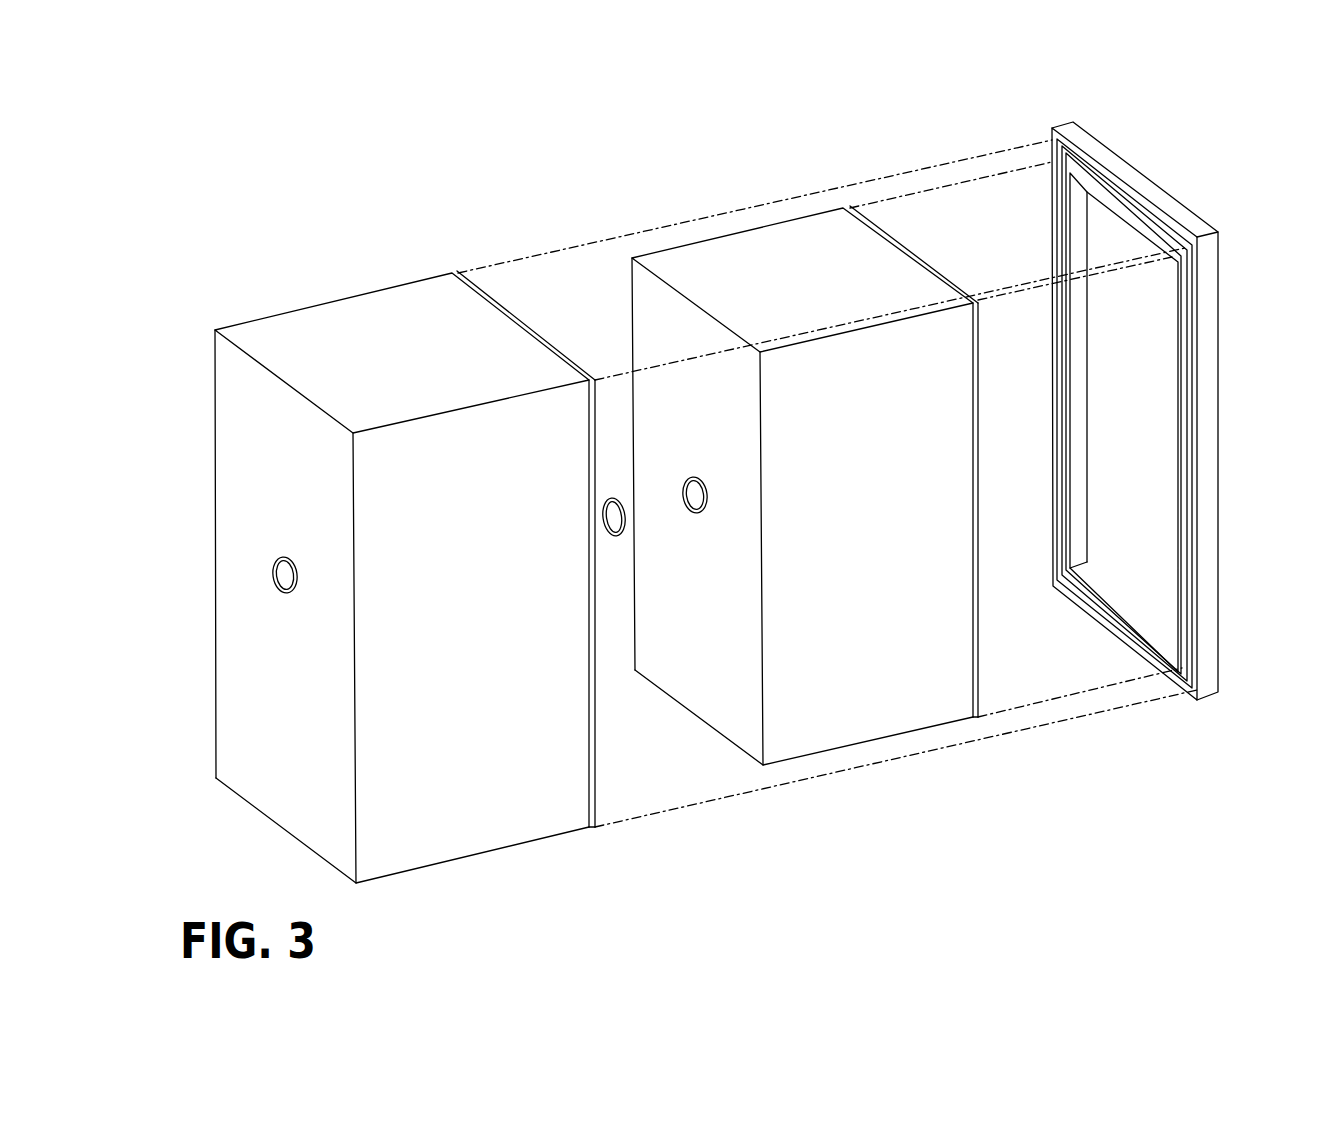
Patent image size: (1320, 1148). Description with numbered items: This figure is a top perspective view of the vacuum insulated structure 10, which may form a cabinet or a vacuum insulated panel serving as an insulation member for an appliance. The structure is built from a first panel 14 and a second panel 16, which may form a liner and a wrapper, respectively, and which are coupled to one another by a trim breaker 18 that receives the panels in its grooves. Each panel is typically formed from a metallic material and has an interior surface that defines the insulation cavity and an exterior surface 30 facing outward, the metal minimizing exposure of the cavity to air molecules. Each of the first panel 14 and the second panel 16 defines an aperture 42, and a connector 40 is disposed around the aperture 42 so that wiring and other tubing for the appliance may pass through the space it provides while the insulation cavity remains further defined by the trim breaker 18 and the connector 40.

The vacuum insulated structure 10 is at (187, 245).
The first panel 14 is at (345, 318).
The second panel 16 is at (765, 260).
The trim breaker 18 is at (1122, 178).
The exterior surface 30 is at (440, 318).
The connector 40 is at (612, 537).
The aperture 42 is at (273, 581).